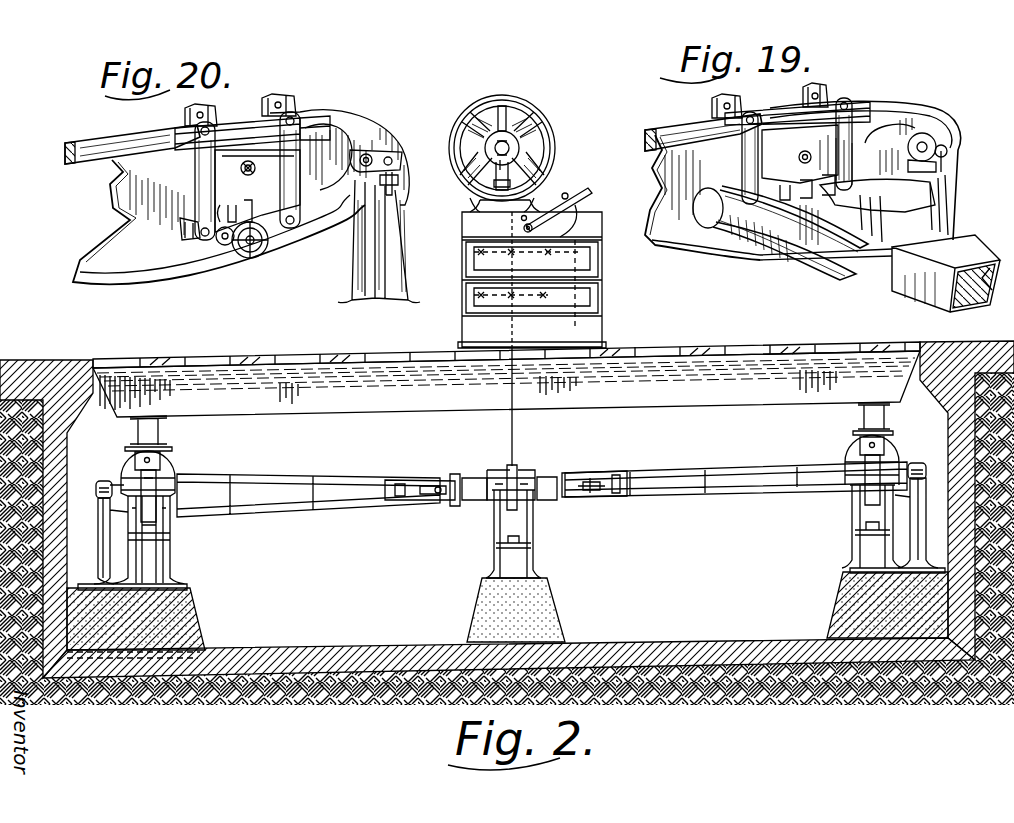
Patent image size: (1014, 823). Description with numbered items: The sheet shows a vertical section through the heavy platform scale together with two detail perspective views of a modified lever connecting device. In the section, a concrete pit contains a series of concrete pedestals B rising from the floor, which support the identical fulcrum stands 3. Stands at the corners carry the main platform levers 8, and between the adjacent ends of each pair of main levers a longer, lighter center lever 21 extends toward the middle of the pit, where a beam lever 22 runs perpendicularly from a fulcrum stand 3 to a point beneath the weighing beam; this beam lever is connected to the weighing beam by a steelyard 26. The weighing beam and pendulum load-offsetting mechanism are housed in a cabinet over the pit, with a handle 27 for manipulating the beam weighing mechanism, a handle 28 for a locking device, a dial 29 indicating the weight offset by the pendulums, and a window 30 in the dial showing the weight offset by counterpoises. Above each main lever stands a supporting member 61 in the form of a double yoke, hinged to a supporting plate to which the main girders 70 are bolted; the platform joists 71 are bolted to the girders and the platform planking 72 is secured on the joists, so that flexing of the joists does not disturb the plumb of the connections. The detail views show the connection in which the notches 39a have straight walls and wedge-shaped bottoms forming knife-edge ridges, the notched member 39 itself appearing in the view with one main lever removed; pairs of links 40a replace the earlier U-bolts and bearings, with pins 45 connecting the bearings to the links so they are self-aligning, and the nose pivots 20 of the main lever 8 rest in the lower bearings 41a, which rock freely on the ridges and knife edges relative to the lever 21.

In FIG. 2, the platform planking 72 is at (294, 356).
In FIG. 2, the platform joists 71 is at (263, 400).
In FIG. 2, the main girders 70 is at (166, 439).
In FIG. 2, the supporting member 61 is at (126, 480).
In FIG. 2, the main platform lever 8 is at (160, 486).
In FIG. 19, the main platform lever 8 is at (884, 258).
In FIG. 2, the fulcrum stand 3 is at (170, 562).
In FIG. 2, the center lever 21 is at (273, 487).
In FIG. 20, the center lever 21 is at (380, 128).
In FIG. 19, the center lever 21 is at (665, 157).
In FIG. 2, the beam lever 22 is at (522, 470).
In FIG. 2, the steelyard 26 is at (510, 430).
In FIG. 2, the handle 27 is at (592, 192).
In FIG. 2, the handle 28 is at (567, 194).
In FIG. 2, the dial 29 is at (530, 124).
In FIG. 2, the window 30 is at (465, 185).
In FIG. 2, the concrete pedestal B is at (190, 609).
In FIG. 20, the links 40a is at (128, 130).
In FIG. 19, the links 40a is at (765, 112).
In FIG. 20, the lower bearings 41a is at (283, 112).
In FIG. 19, the lower bearings 41a is at (844, 96).
In FIG. 20, the pins 45 is at (204, 114).
In FIG. 19, the pins 45 is at (718, 104).
In FIG. 20, the plate 39 is at (312, 110).
In FIG. 19, the notches 39a is at (700, 120).
In FIG. 19, the nose pivot 20 is at (820, 190).